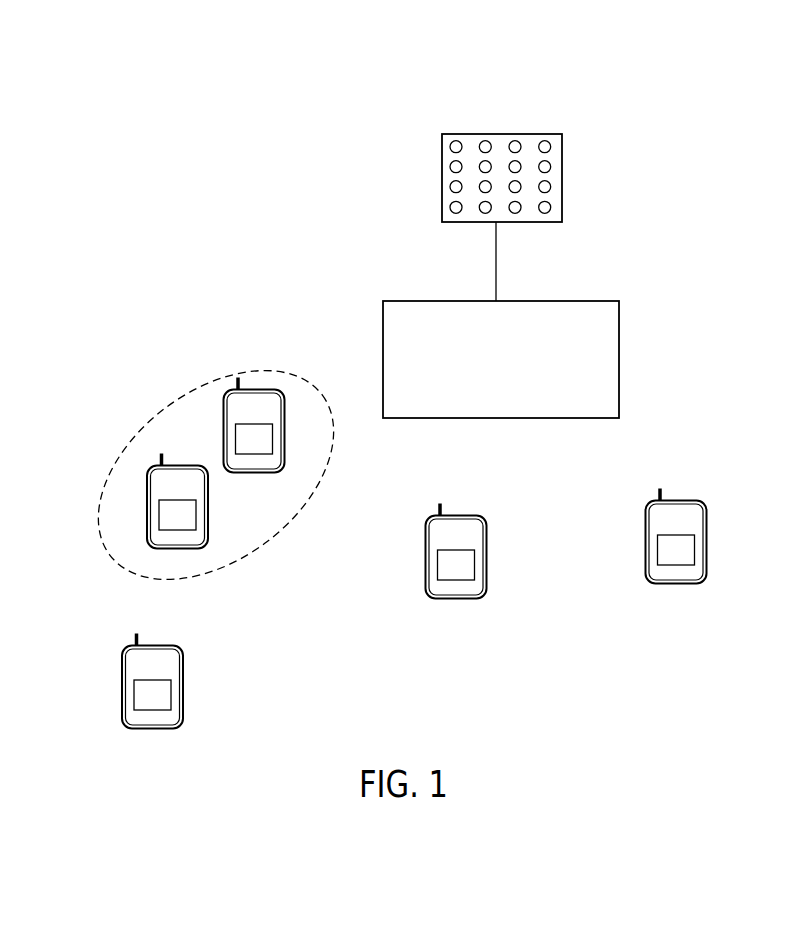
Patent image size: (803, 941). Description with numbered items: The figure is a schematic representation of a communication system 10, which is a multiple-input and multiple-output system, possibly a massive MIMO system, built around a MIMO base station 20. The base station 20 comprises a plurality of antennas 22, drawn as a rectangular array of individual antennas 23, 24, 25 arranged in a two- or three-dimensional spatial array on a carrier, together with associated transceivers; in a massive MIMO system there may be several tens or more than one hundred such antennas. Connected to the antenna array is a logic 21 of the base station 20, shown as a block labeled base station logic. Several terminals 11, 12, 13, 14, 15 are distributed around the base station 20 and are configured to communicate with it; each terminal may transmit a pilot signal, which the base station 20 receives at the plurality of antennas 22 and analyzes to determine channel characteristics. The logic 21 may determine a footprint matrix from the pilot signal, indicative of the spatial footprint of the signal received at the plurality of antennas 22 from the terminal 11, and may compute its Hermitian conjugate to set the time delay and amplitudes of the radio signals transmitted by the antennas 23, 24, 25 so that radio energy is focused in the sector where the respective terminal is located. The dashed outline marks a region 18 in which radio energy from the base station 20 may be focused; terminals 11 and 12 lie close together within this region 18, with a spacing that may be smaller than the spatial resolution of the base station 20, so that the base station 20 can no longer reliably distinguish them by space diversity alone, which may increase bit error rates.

The communication system 10 is at (86, 60).
The terminal 11 is at (284, 396).
The terminal 12 is at (153, 547).
The terminal 13 is at (125, 729).
The terminal 14 is at (428, 598).
The terminal 15 is at (648, 582).
The region 18 is at (140, 438).
The MIMO base station 20 is at (334, 126).
The logic 21 is at (619, 418).
The plurality of antennas 22 is at (444, 221).
The antenna 23 is at (550, 208).
The antenna 24 is at (550, 188).
The antenna 25 is at (550, 165).